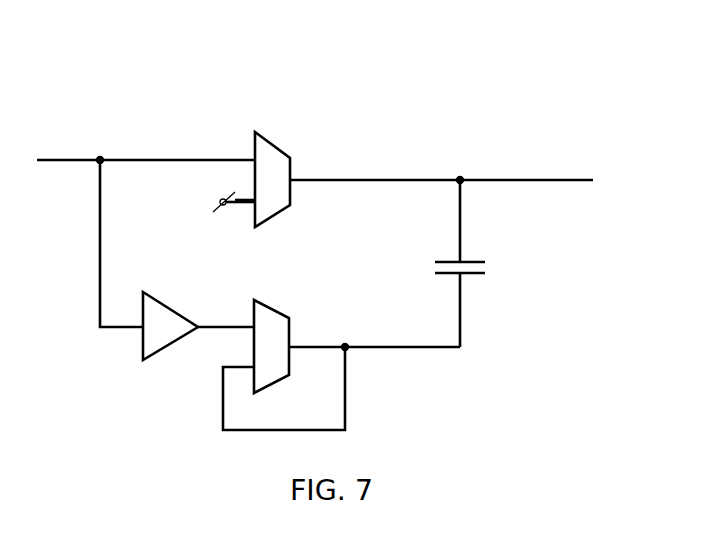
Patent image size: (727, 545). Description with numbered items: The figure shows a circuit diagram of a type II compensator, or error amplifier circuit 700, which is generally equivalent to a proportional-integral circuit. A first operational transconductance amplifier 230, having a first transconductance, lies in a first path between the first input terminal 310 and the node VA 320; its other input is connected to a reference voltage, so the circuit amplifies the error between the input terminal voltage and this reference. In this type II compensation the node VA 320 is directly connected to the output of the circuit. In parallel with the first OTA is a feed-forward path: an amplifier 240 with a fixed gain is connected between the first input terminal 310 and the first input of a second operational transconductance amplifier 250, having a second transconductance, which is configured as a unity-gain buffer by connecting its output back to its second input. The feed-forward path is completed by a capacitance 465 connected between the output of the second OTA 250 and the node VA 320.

The error amplifier circuit 700 is at (537, 58).
The first input terminal 310 is at (96, 165).
The first operational transconductance amplifier 230 is at (292, 158).
The node VA 320 is at (463, 183).
The capacitance 465 is at (478, 276).
The amplifier 240 is at (145, 362).
The second operational transconductance amplifier 250 is at (290, 318).